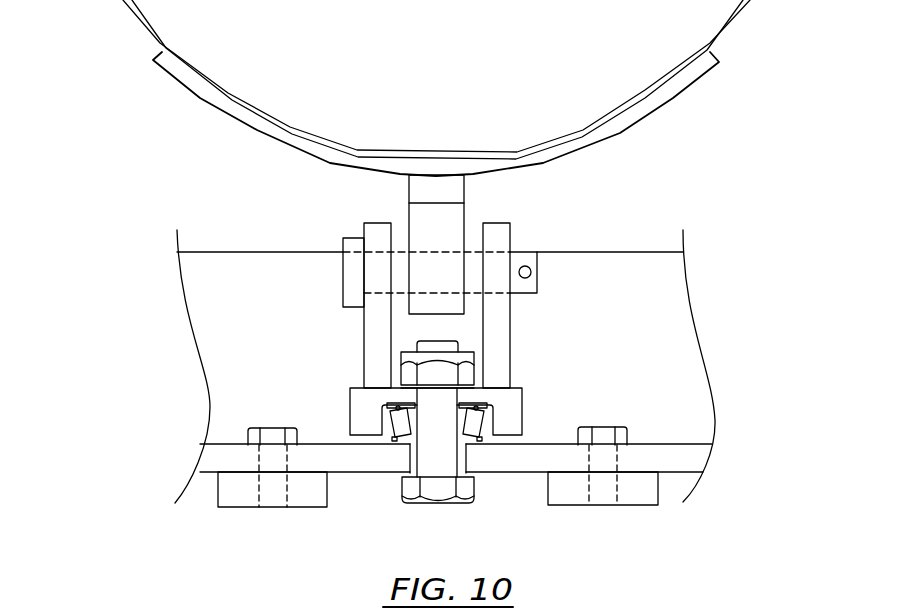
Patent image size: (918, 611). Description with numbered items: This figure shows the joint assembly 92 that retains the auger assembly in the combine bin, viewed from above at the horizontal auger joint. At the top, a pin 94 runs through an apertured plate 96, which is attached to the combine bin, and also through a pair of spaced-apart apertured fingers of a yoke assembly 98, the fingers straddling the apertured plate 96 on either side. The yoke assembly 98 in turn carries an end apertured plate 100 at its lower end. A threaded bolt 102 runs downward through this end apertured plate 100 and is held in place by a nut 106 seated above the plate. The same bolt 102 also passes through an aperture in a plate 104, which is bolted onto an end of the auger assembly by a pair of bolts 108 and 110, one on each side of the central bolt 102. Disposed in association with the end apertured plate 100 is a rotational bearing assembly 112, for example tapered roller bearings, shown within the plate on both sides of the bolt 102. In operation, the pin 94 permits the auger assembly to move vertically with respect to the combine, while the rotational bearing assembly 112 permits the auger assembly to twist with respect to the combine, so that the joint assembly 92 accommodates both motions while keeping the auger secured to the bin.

The joint assembly 92 is at (622, 307).
The pin 94 is at (527, 266).
The apertured plate 96 is at (466, 192).
The yoke assembly 98 is at (511, 343).
The end apertured plate 100 is at (523, 397).
The threaded bolt 102 is at (438, 492).
The plate 104 is at (510, 473).
The nut 106 is at (410, 354).
The bolt 108 is at (275, 431).
The bolt 110 is at (603, 425).
The rotational bearing assembly 112 is at (393, 437).